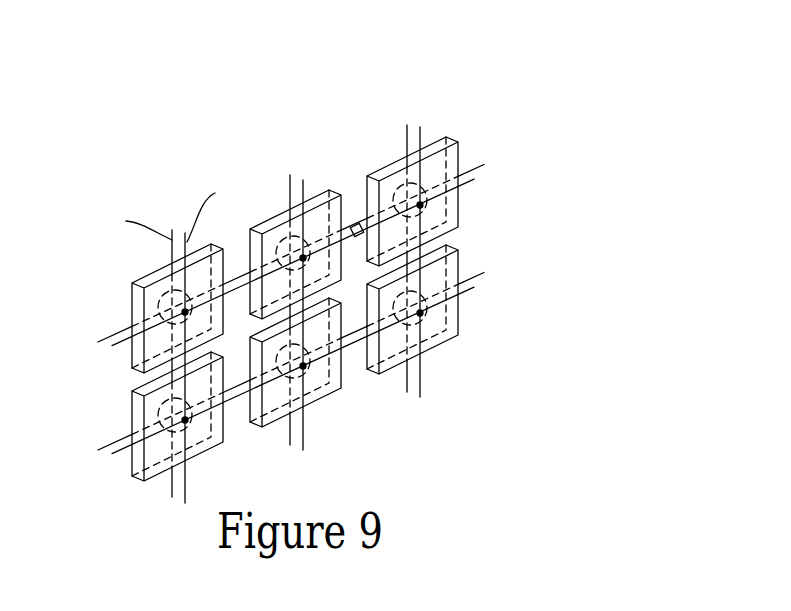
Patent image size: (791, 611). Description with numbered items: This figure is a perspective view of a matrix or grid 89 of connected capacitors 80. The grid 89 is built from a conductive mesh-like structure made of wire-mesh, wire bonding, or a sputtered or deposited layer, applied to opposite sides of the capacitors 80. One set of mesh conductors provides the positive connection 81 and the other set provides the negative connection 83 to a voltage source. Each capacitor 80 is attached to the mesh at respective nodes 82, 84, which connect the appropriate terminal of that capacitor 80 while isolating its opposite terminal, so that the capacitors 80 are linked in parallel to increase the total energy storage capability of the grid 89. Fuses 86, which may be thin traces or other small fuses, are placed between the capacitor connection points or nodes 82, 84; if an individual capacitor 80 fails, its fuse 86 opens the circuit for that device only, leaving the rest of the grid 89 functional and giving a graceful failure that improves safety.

The capacitor 80 is at (459, 162).
The positive conductive mesh connection 81 is at (471, 183).
The node 82 is at (421, 206).
The negative conductive mesh connection 83 is at (407, 125).
The node 84 is at (392, 162).
The fuse 86 is at (355, 224).
The grid 89 is at (373, 283).